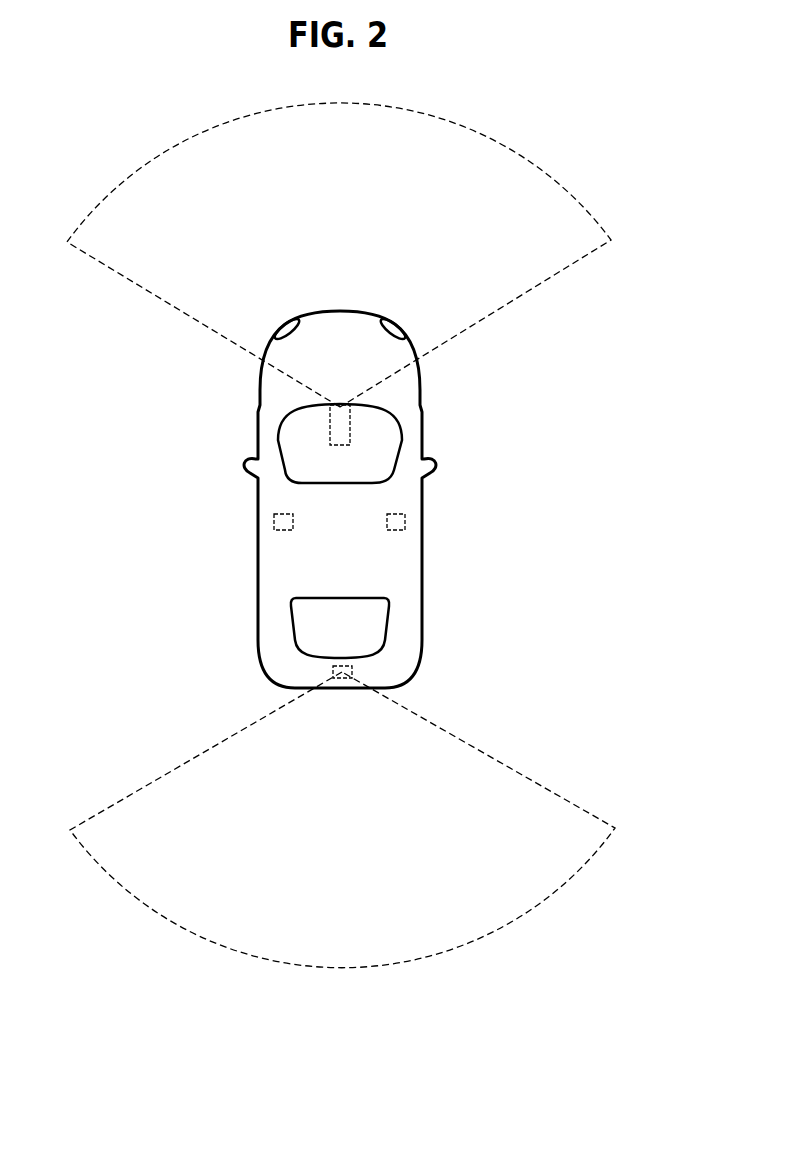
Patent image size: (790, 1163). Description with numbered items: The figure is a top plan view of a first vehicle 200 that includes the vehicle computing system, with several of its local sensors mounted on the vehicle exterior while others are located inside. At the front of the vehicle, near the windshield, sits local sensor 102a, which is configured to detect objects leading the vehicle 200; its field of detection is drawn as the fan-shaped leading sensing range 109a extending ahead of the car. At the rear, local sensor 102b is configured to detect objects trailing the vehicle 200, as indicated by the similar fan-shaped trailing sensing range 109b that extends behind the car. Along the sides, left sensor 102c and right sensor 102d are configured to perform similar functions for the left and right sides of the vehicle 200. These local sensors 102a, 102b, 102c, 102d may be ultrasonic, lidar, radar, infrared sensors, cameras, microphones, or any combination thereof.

The first vehicle 200 is at (612, 500).
The local sensor 102a is at (340, 430).
The local sensor 102b is at (342, 676).
The left sensor 102c is at (283, 521).
The right sensor 102d is at (396, 521).
The leading sensing range 109a is at (503, 308).
The trailing sensing range 109b is at (593, 814).